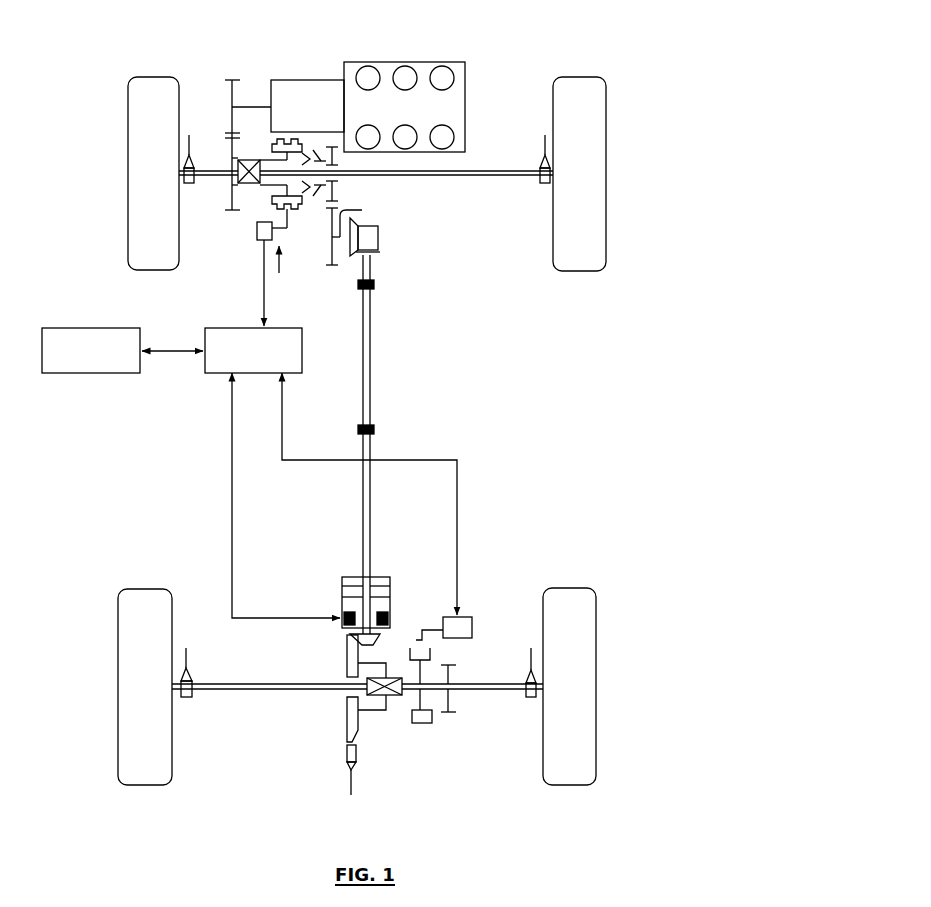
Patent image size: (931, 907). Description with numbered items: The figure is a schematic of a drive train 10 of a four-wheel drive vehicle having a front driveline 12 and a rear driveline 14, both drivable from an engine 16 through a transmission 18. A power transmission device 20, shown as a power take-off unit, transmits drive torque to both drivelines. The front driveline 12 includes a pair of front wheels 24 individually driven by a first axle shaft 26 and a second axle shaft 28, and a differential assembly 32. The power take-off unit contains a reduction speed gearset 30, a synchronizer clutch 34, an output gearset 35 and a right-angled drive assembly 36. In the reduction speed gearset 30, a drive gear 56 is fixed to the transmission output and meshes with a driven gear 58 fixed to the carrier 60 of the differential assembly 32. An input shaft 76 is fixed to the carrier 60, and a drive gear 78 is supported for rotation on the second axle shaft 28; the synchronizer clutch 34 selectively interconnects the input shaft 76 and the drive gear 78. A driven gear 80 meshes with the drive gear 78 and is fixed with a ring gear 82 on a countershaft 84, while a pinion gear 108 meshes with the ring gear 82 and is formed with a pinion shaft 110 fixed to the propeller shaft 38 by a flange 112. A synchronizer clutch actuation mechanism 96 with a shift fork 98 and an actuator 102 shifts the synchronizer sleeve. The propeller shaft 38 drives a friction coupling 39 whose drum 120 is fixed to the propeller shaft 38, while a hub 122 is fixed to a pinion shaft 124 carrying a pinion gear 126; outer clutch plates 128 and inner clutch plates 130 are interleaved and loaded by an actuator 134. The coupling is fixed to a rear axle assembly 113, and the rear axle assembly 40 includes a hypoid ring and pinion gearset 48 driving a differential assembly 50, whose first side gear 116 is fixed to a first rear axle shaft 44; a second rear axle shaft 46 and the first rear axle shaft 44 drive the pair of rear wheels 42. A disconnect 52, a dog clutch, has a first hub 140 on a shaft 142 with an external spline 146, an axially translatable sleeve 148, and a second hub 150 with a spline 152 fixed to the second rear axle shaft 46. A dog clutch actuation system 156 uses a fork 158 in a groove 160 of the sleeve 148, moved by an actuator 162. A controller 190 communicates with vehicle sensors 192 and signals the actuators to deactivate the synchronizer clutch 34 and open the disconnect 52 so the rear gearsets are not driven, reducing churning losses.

The drive train 10 is at (548, 44).
The front driveline 12 is at (217, 218).
The rear driveline 14 is at (444, 599).
The engine 16 is at (421, 65).
The transmission 18 is at (318, 81).
The power transmission device 20 is at (212, 108).
The front wheels 24 is at (133, 165).
The first axle shaft 26 is at (203, 166).
The second axle shaft 28 is at (528, 178).
The reduction speed gearset 30 is at (217, 88).
The differential assembly 32 is at (252, 189).
The synchronizer clutch 34 is at (314, 150).
The output gearset 35 is at (345, 200).
The right-angled drive assembly 36 is at (382, 248).
The propeller shaft 38 is at (370, 390).
The friction coupling 39 is at (400, 588).
The rear axle assembly 40 is at (226, 554).
The rear wheels 42 is at (140, 680).
The first rear axle shaft 44 is at (230, 683).
The second rear axle shaft 46 is at (511, 683).
The hypoid ring and pinion gearset 48 is at (334, 667).
The differential assembly 50 is at (400, 674).
The disconnect 52 is at (443, 725).
The drive gear 56 is at (244, 83).
The driven gear 58 is at (230, 141).
The carrier 60 is at (244, 156).
The input shaft 76 is at (280, 161).
The drive gear 78 is at (336, 183).
The driven gear 80 is at (331, 240).
The ring gear 82 is at (360, 227).
The countershaft 84 is at (362, 210).
The synchronizer clutch actuation mechanism 96 is at (278, 271).
The shift fork 98 is at (289, 216).
The actuator 102 is at (258, 239).
The pinion gear 108 is at (383, 251).
The pinion shaft 110 is at (362, 271).
The flange 112 is at (371, 291).
The rear axle assembly 113 is at (257, 702).
The first side gear 116 is at (348, 690).
The drum 120 is at (342, 581).
The hub 122 is at (374, 583).
The pinion shaft 124 is at (342, 590).
The pinion gear 126 is at (343, 628).
The outer clutch plates 128 is at (384, 598).
The inner clutch plates 130 is at (343, 604).
The actuator 134 is at (387, 610).
The first hub 140 is at (413, 696).
The shaft 142 is at (408, 692).
The external spline 146 is at (423, 723).
The sleeve 148 is at (432, 655).
The second hub 150 is at (450, 696).
The spline 152 is at (445, 713).
The dog clutch actuation system 156 is at (476, 608).
The fork 158 is at (420, 641).
The groove 160 is at (420, 728).
The actuator 162 is at (473, 629).
The controller 190 is at (288, 329).
The vehicle sensors 192 is at (188, 186).